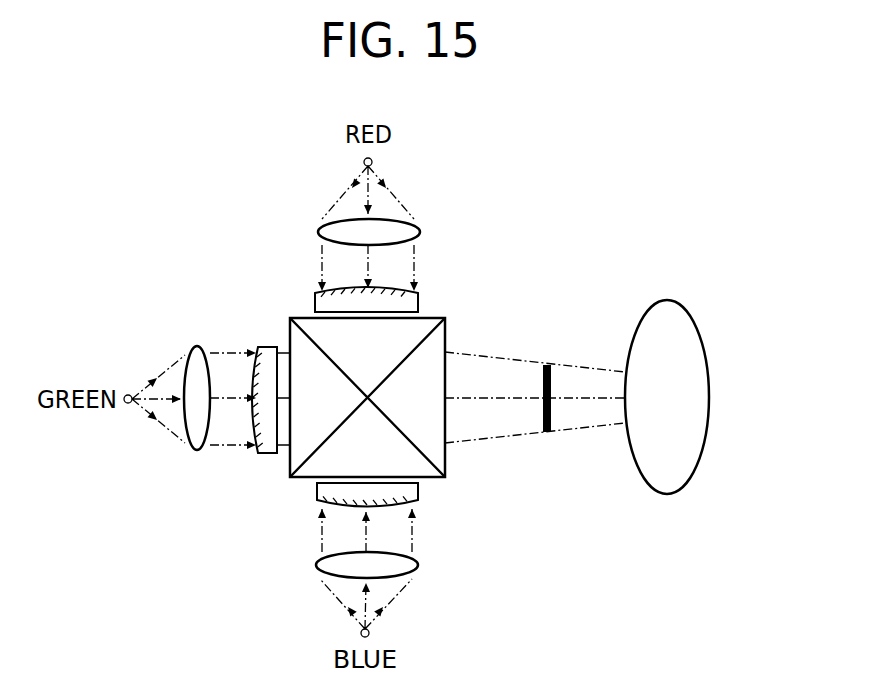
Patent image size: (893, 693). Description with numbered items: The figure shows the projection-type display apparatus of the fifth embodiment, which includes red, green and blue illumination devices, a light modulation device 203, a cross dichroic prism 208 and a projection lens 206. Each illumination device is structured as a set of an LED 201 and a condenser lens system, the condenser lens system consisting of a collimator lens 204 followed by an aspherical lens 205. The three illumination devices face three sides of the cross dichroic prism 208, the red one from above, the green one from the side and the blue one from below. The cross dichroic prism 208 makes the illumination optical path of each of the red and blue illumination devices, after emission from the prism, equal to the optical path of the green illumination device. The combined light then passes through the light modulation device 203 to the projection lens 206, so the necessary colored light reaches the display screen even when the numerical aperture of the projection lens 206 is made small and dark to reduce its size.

The LED 201 is at (361, 633).
The light modulation device 203 is at (547, 432).
The collimator lens 204 is at (317, 562).
The aspherical lens 205 is at (317, 491).
The projection lens 206 is at (683, 304).
The cross dichroic prism 208 is at (446, 333).